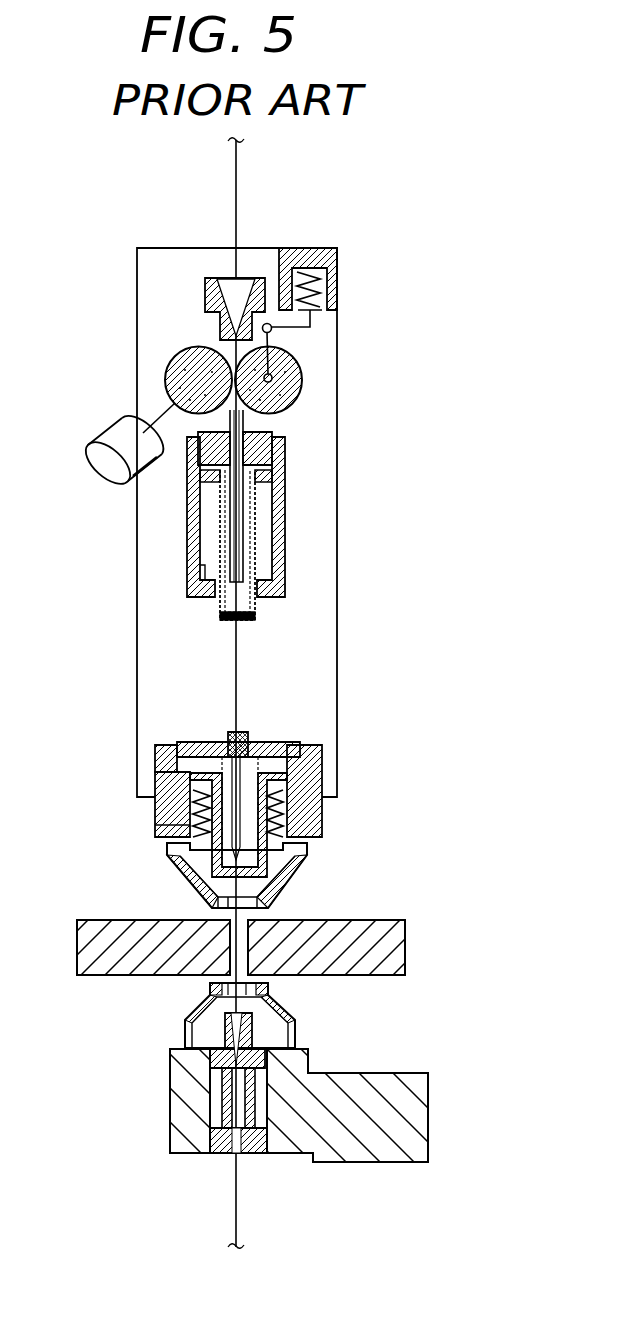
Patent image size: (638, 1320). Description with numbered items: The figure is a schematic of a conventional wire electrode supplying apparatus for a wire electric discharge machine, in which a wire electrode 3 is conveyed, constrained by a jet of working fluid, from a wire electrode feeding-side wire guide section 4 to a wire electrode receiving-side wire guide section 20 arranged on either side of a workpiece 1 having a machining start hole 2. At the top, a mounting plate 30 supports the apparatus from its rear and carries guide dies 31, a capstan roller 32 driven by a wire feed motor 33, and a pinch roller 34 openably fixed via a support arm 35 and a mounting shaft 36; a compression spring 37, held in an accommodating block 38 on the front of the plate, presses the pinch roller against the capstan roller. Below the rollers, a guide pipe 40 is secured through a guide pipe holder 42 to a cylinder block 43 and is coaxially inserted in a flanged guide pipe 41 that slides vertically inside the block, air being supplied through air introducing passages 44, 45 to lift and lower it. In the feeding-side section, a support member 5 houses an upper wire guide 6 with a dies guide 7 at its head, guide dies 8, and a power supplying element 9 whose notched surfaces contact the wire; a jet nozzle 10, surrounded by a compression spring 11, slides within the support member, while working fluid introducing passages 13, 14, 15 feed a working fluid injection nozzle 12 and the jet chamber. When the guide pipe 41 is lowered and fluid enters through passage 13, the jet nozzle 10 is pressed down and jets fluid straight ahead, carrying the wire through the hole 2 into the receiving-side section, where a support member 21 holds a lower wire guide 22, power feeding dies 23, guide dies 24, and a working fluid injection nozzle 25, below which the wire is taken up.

The workpiece 1 is at (405, 950).
The machining start hole 2 is at (228, 947).
The wire electrode 3 is at (237, 197).
The wire electrode feeding-side wire guide section 4 is at (442, 802).
The support member 5 is at (322, 795).
The upper wire guide 6 is at (292, 742).
The dies guide 7 is at (288, 884).
The guide dies 8 is at (240, 733).
The power supplying element 9 is at (223, 770).
The jet nozzle 10 is at (185, 877).
The compression spring 11 is at (290, 826).
The working fluid injection nozzle 12 is at (192, 887).
The working fluid introducing passage 13 is at (155, 754).
The working fluid introducing passage 14 is at (158, 827).
The working fluid introducing passage 15 is at (185, 808).
The wire electrode receiving-side wire guide section 20 is at (447, 1139).
The support member 21 is at (382, 1073).
The lower wire guide 22 is at (220, 1068).
The power feeding dies 23 is at (222, 1112).
The guide dies 24 is at (197, 1152).
The working fluid injection nozzle 25 is at (295, 1013).
The mounting plate 30 is at (265, 247).
The guide dies 31 is at (213, 278).
The capstan roller 32 is at (192, 352).
The wire feed motor 33 is at (108, 432).
The pinch roller 34 is at (301, 388).
The support arm 35 is at (280, 362).
The mounting shaft 36 is at (272, 328).
The compression spring 37 is at (324, 297).
The accommodating block 38 is at (337, 262).
The guide pipe 40 is at (243, 422).
The guide pipe 41 is at (256, 614).
The guide pipe holder 42 is at (280, 455).
The cylinder block 43 is at (285, 543).
The air introducing passage 44 is at (187, 480).
The air introducing passage 45 is at (187, 556).